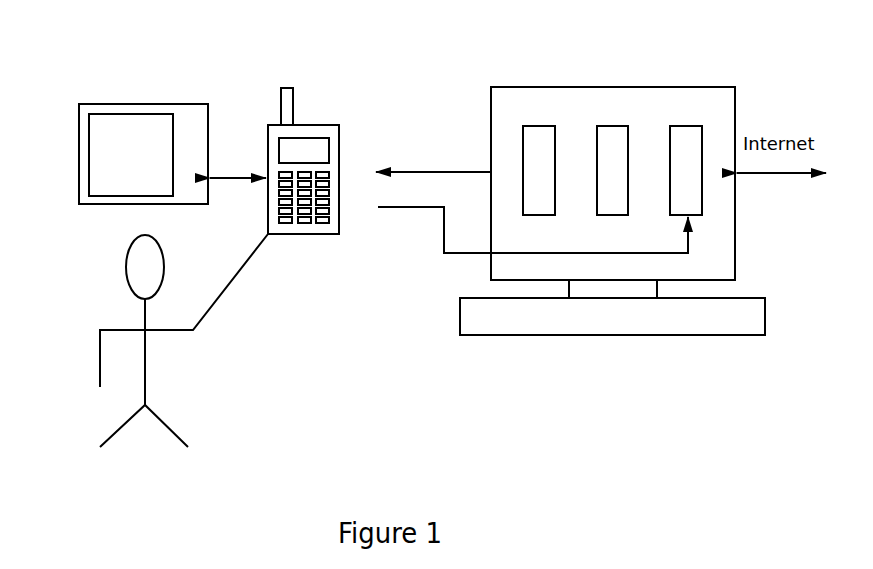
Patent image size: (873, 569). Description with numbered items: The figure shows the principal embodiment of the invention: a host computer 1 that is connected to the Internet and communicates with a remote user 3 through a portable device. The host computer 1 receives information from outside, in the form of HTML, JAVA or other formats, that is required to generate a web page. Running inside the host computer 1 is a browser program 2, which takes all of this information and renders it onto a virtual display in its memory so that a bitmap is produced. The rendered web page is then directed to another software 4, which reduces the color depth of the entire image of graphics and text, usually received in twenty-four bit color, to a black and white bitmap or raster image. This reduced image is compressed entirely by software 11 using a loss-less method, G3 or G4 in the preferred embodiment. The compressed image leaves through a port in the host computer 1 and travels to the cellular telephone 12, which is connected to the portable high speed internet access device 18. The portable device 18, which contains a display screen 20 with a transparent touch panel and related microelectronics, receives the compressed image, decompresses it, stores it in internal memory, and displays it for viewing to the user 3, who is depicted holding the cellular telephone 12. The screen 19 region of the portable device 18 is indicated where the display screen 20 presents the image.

The host computer 1 is at (626, 204).
The browser program 2 is at (692, 126).
The remote user 3 is at (165, 420).
The software 4 is at (610, 126).
The software 11 is at (537, 126).
The cellular telephone 12 is at (305, 137).
The portable high speed internet access device 18 is at (121, 159).
The display screen 19 is at (163, 112).
The display screen 20 is at (110, 138).